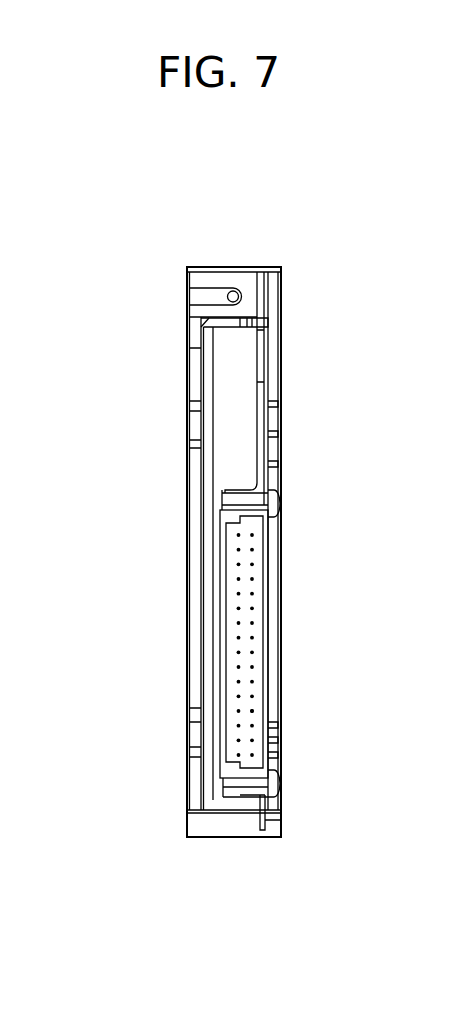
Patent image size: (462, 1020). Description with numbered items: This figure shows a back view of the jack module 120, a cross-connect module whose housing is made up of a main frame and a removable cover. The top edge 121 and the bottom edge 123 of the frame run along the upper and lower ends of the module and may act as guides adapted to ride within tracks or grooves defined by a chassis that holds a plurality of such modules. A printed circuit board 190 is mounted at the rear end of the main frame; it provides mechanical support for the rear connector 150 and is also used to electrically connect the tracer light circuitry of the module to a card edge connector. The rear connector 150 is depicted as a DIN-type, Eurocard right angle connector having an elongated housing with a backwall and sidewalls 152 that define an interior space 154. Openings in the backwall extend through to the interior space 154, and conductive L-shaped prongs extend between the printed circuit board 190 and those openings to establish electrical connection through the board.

The jack module 120 is at (177, 220).
The top edge 121 is at (262, 277).
The printed circuit board 190 is at (263, 430).
The sidewalls 152 is at (227, 572).
The rear connector 150 is at (255, 625).
The interior space 154 is at (254, 709).
The bottom edge 123 is at (265, 807).